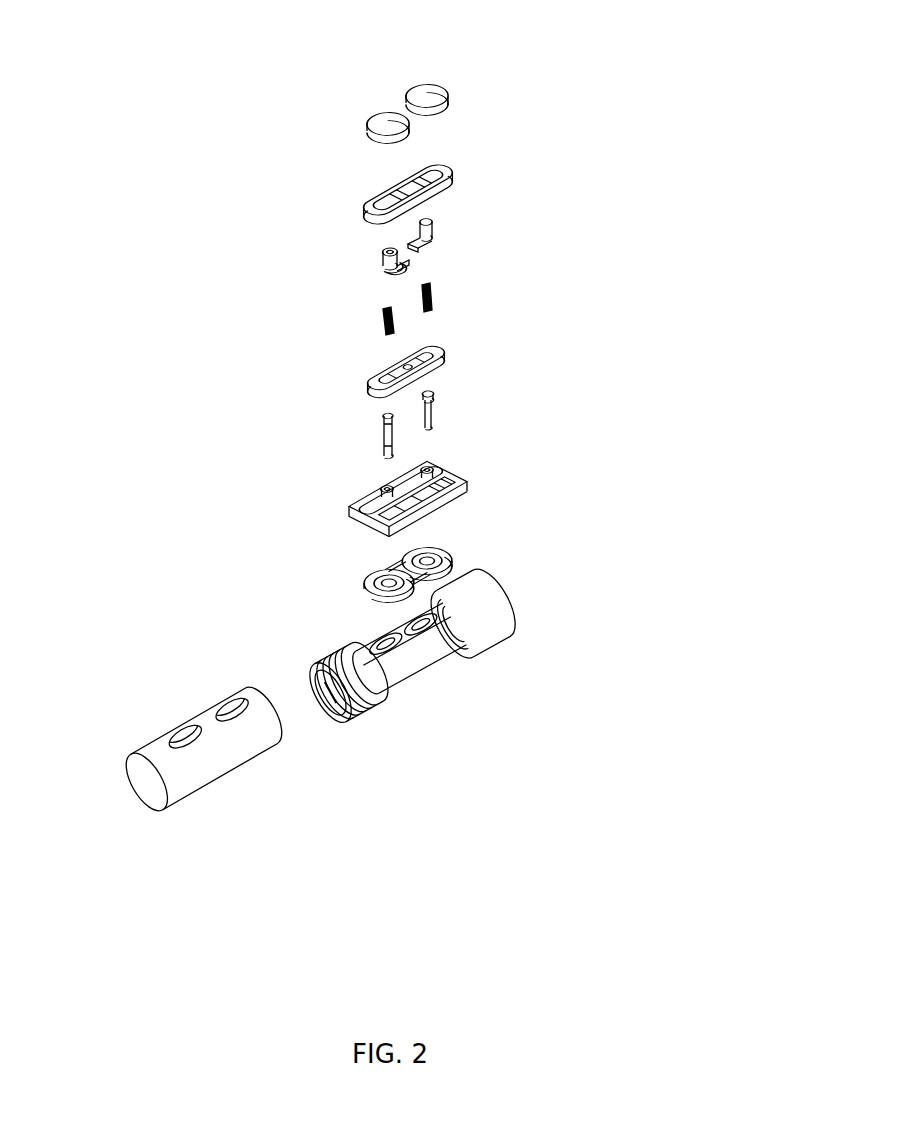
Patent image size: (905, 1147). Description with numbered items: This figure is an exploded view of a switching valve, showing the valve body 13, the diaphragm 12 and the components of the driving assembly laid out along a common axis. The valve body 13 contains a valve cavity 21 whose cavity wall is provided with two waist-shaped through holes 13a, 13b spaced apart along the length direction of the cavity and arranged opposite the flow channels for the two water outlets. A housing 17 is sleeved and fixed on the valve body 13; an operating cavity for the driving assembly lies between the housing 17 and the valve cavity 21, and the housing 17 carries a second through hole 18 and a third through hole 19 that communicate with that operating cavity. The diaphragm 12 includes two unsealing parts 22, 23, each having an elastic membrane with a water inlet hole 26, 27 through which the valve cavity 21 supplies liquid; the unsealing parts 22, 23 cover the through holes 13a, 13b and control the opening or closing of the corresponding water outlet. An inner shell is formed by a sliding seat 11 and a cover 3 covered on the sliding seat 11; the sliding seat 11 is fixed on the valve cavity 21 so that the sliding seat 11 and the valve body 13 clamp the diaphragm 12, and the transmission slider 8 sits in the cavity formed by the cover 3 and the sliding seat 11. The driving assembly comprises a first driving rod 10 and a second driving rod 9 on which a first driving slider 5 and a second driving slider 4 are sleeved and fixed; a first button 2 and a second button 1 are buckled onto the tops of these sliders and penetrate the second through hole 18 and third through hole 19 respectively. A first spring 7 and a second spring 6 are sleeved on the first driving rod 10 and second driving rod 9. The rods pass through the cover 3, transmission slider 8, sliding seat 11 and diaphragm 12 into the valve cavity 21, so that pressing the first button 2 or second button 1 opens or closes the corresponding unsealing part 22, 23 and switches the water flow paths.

The second button 1 is at (483, 72).
The first button 2 is at (329, 100).
The cover 3 is at (465, 162).
The second driving slider 4 is at (494, 211).
The first driving slider 5 is at (334, 235).
The second spring 6 is at (491, 278).
The first spring 7 is at (330, 301).
The transmission slider 8 is at (471, 347).
The second driving rod 9 is at (501, 395).
The first driving rod 10 is at (326, 415).
The sliding seat 11 is at (469, 478).
The diaphragm 12 is at (472, 551).
The valve body 13 is at (469, 642).
The through hole 13a is at (400, 680).
The through hole 13b is at (457, 660).
The housing 17 is at (234, 752).
The second through hole 18 is at (132, 715).
The third through hole 19 is at (181, 688).
The valve cavity 21 is at (330, 690).
The unsealing part 22 is at (366, 581).
The unsealing part 23 is at (436, 574).
The water inlet hole 26 is at (386, 574).
The water inlet hole 27 is at (426, 547).